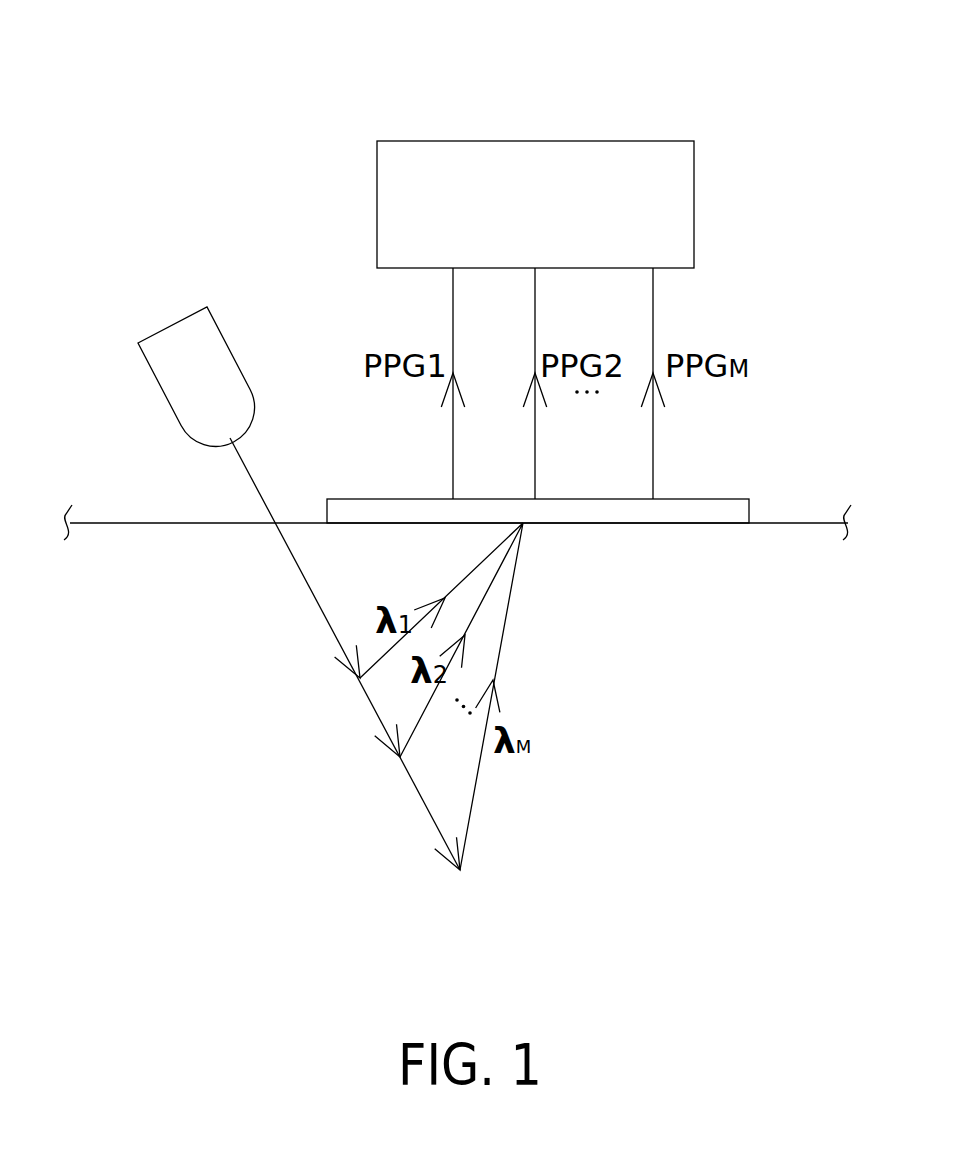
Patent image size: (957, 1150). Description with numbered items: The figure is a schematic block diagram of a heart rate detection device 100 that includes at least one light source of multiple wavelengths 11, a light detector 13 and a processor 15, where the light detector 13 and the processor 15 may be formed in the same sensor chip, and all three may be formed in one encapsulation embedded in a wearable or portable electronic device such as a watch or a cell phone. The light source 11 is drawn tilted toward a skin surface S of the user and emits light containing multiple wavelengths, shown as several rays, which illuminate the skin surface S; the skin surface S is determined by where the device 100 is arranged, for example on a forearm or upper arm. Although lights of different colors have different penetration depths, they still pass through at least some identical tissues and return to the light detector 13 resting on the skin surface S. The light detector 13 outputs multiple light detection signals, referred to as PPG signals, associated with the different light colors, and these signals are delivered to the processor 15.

The heart rate detection device 100 is at (230, 43).
The light source of multiple wavelengths 11 is at (187, 317).
The light detector 13 is at (742, 499).
The processor 15 is at (612, 140).
The skin surface S is at (100, 523).